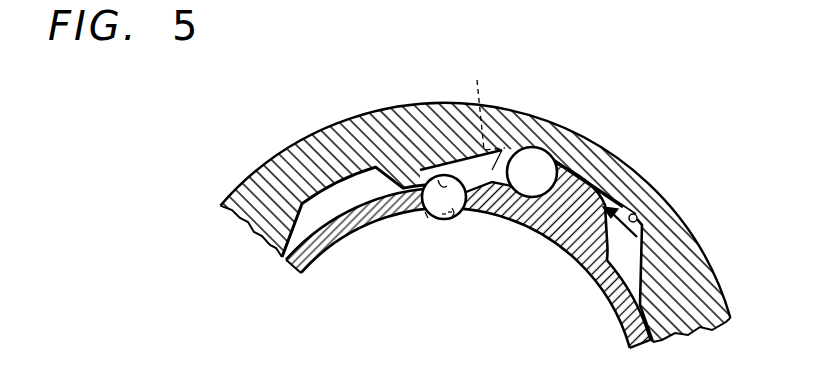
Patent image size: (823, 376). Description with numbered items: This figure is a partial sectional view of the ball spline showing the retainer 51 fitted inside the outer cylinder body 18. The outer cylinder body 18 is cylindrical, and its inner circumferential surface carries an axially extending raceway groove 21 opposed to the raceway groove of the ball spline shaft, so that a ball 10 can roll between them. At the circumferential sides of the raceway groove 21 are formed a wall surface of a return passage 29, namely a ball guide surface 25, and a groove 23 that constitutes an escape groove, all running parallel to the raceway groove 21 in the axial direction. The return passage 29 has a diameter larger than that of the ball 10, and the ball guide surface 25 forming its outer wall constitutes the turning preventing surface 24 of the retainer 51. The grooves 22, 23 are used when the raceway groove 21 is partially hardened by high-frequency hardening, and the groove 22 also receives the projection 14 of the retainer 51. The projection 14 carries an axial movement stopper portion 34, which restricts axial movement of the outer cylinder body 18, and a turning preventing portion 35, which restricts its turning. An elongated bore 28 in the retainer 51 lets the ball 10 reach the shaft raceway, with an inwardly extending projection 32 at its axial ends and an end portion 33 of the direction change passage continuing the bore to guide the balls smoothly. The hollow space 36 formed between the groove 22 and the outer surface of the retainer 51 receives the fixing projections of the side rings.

The ball 10 is at (443, 218).
The projection 14 is at (573, 253).
The outer cylinder body 18 is at (303, 165).
The raceway groove 21 is at (432, 177).
The groove 22 is at (638, 213).
The groove 23 is at (325, 192).
The turning preventing surface 24 is at (500, 215).
The ball guide surface 25 is at (542, 149).
The elongated bore 28 is at (427, 222).
The return passage 29 is at (560, 152).
The inwardly extending projection 32 is at (448, 216).
The end portion of direction change passage 33 is at (465, 215).
The axial movement stopper portion 34 is at (483, 99).
The turning preventing portion 35 is at (500, 163).
The hollow space 36 is at (622, 272).
The retainer 51 is at (358, 218).